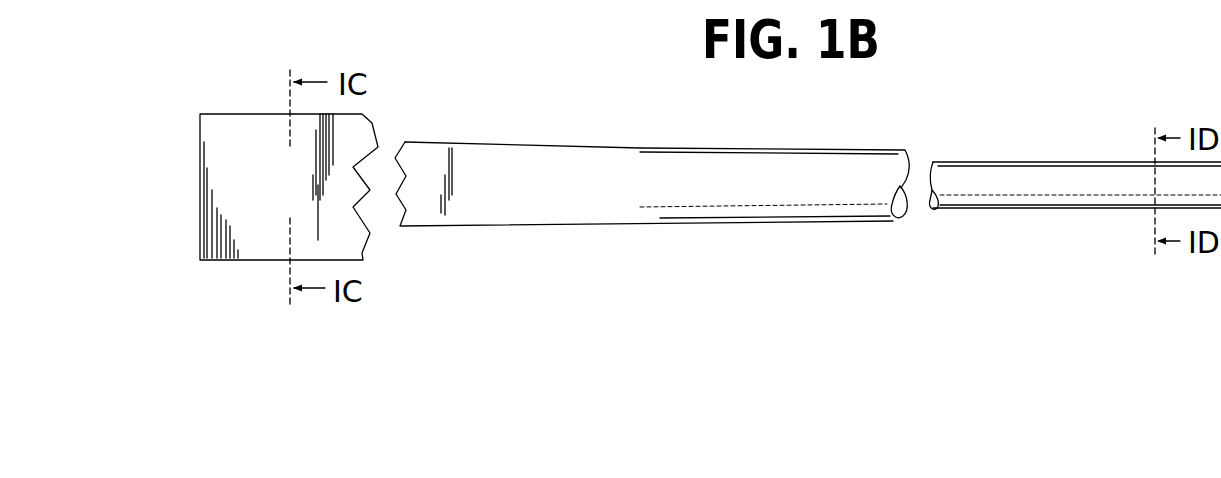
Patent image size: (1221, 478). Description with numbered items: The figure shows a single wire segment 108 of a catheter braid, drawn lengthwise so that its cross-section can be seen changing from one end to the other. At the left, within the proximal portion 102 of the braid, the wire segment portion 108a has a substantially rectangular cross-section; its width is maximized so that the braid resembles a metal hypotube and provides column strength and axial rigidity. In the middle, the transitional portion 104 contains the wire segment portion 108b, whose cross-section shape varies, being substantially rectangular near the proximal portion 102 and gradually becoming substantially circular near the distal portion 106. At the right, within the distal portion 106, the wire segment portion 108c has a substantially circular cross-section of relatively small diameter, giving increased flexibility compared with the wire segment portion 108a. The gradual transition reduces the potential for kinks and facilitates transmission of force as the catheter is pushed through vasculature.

The proximal portion 102 is at (266, 204).
The transitional portion 104 is at (652, 223).
The distal portion 106 is at (1075, 239).
The wire segment 108 is at (652, 151).
The wire segment portion 108a is at (266, 123).
The wire segment portion 108b is at (548, 160).
The wire segment portion 108c is at (1075, 158).